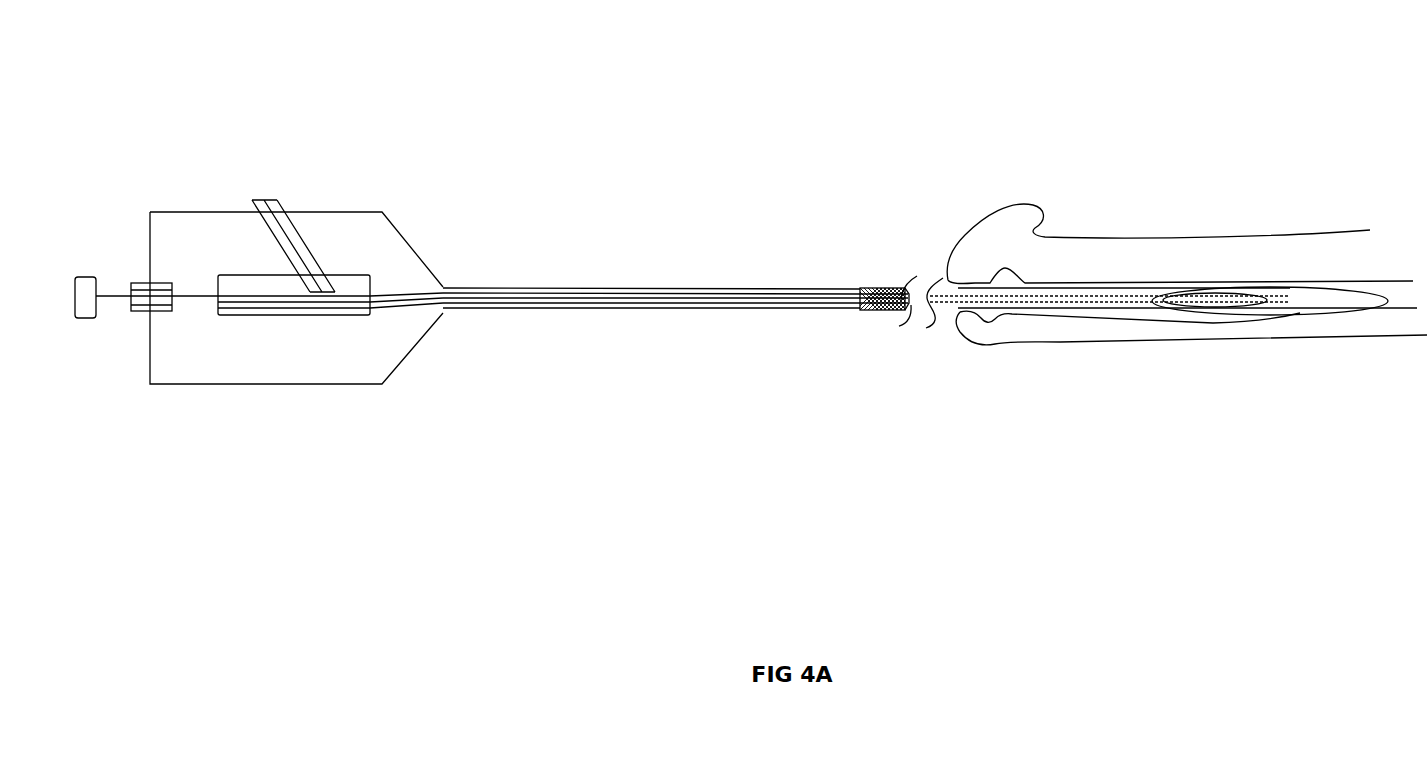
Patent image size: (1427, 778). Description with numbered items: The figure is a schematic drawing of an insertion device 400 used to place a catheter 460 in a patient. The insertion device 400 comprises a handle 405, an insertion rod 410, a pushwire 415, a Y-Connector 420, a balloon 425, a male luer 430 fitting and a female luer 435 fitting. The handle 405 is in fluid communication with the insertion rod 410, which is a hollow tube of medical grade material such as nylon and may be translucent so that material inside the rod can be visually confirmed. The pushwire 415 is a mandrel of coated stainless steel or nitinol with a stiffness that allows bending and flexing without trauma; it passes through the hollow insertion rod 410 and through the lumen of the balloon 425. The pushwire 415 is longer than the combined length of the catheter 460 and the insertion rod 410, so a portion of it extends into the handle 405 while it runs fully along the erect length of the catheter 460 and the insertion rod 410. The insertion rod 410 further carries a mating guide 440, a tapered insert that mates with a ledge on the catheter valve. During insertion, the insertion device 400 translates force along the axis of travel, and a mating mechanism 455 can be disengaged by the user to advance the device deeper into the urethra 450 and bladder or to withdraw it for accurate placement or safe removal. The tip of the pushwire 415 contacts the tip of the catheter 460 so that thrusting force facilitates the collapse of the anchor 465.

The insertion device 400 is at (309, 433).
The handle 405 is at (352, 233).
The insertion rod 410 is at (758, 288).
The pushwire 415 is at (576, 308).
The Y-Connector 420 is at (269, 200).
The balloon 425 is at (873, 288).
The male luer fitting 430 is at (87, 318).
The female luer fitting 435 is at (135, 283).
The mating guide 440 is at (857, 310).
The urethra 450 is at (1086, 325).
The mating mechanism 455 is at (865, 288).
The catheter 460 is at (946, 313).
The anchor 465 is at (1211, 323).